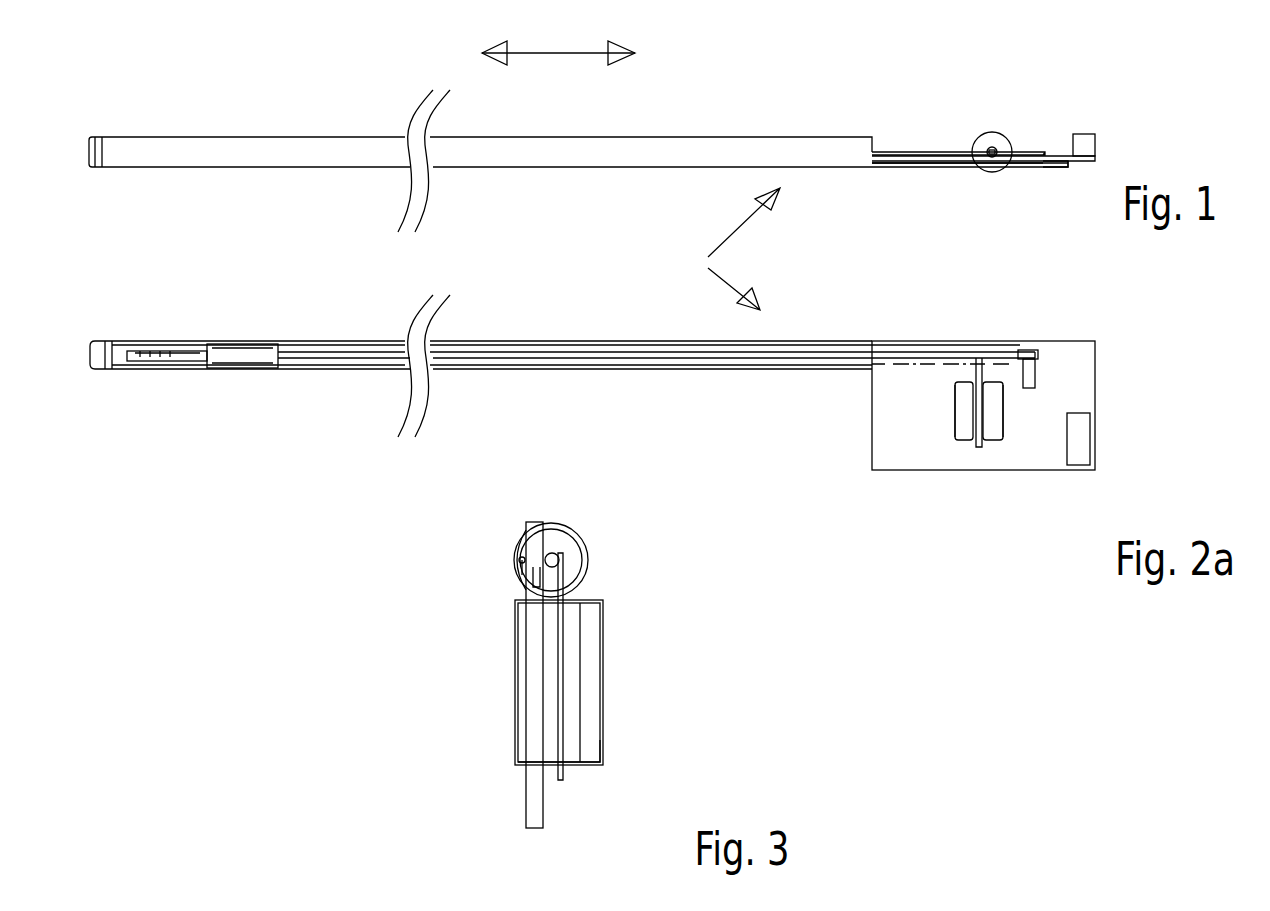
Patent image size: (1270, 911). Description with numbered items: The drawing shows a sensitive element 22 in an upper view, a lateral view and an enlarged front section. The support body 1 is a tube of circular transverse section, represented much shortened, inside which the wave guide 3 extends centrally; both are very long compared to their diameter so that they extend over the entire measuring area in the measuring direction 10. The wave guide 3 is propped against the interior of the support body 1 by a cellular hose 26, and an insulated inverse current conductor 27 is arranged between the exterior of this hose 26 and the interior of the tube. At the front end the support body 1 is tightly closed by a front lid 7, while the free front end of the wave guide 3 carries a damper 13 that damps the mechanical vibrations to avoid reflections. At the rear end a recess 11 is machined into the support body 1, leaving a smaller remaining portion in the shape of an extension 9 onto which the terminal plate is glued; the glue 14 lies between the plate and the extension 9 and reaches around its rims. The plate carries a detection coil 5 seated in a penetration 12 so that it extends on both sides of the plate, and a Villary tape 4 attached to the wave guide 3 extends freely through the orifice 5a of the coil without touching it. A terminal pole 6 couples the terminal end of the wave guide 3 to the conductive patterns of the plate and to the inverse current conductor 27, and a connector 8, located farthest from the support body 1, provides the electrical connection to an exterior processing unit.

In FIG. 3, the support body 1 is at (587, 553).
In FIG. 1, the wave guide 3 is at (1043, 150).
In FIG. 2A, the wave guide 3 is at (1027, 350).
In FIG. 3, the wave guide 3 is at (555, 552).
In FIG. 1, the Villary tape 4 is at (996, 148).
In FIG. 2A, the Villary tape 4 is at (977, 448).
In FIG. 3, the Villary tape 4 is at (563, 780).
In FIG. 1, the detection coil 5 is at (980, 140).
In FIG. 2A, the detection coil 5 is at (960, 437).
In FIG. 3, the detection coil 5 is at (590, 672).
In FIG. 3, the orifice 5a is at (575, 753).
In FIG. 2A, the terminal pole 6 is at (1036, 380).
In FIG. 3, the terminal pole 6 is at (541, 551).
In FIG. 1, the front lid 7 is at (91, 137).
In FIG. 2A, the front lid 7 is at (91, 369).
In FIG. 1, the connector 8 is at (1085, 140).
In FIG. 2A, the connector 8 is at (1085, 443).
In FIG. 1, the extension 9 is at (933, 168).
In FIG. 3, the extension 9 is at (517, 543).
In FIG. 1, the measuring direction 10 is at (548, 53).
In FIG. 1, the recess 11 is at (903, 140).
In FIG. 2A, the recess 11 is at (600, 382).
In FIG. 2A, the penetration 12 is at (955, 384).
In FIG. 2A, the damper 13 is at (133, 359).
In FIG. 3, the glue 14 is at (518, 557).
In FIG. 1, the sensitive element 22 is at (728, 249).
In FIG. 3, the cellular hose 26 is at (570, 563).
In FIG. 1, the inverse current conductor 27 is at (1057, 167).
In FIG. 3, the inverse current conductor 27 is at (522, 563).